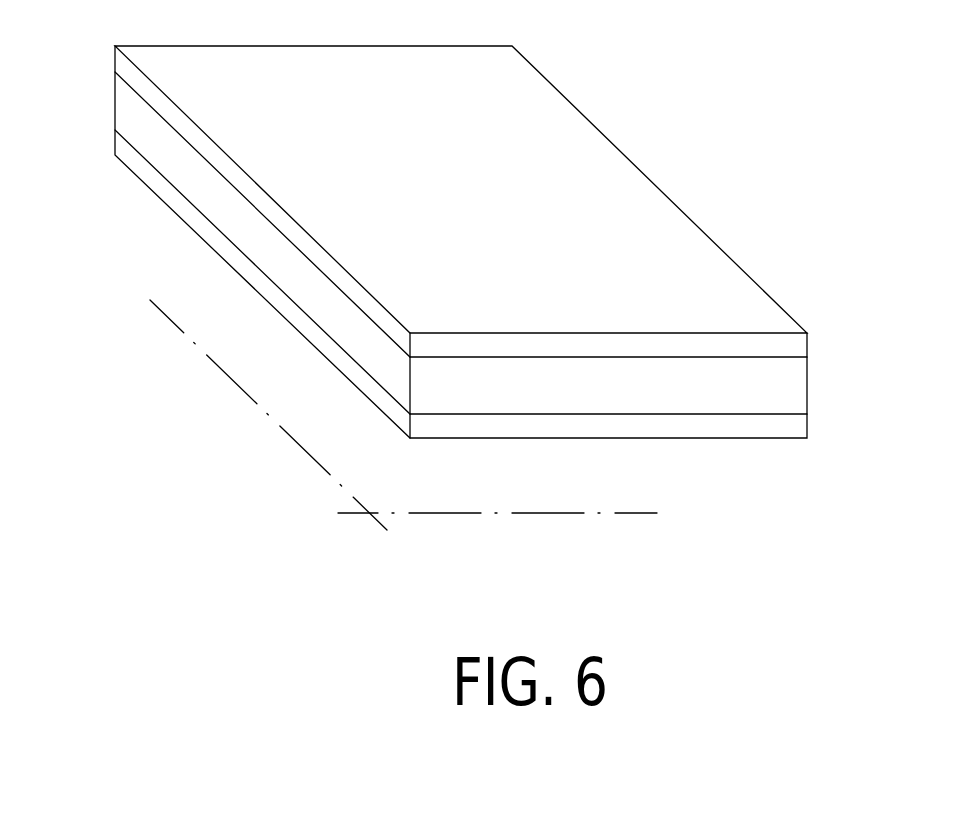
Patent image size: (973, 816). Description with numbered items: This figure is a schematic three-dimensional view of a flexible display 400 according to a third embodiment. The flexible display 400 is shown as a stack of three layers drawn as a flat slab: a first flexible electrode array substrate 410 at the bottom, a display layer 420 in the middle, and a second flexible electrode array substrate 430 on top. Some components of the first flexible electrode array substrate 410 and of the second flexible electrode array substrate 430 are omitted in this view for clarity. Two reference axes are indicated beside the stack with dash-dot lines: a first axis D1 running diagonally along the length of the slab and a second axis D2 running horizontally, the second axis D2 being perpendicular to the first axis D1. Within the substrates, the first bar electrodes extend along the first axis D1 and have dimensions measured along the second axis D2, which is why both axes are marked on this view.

The flexible display 400 is at (533, 286).
The first flexible electrode array substrate 410 is at (814, 428).
The display layer 420 is at (814, 387).
The second flexible electrode array substrate 430 is at (814, 344).
The first axis D1 is at (228, 377).
The second axis D2 is at (568, 513).